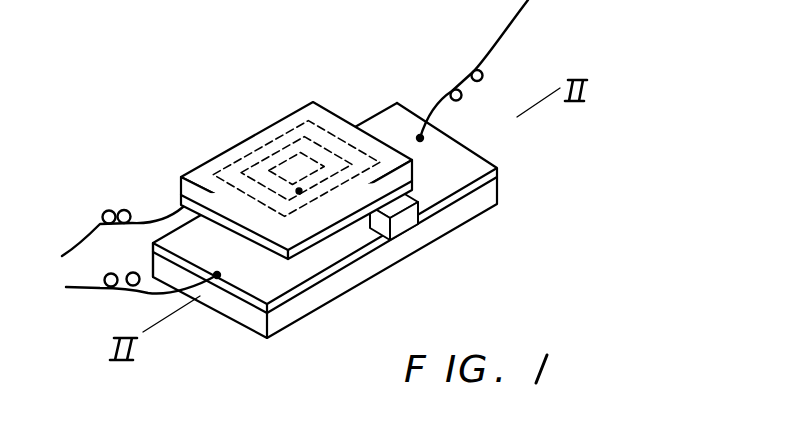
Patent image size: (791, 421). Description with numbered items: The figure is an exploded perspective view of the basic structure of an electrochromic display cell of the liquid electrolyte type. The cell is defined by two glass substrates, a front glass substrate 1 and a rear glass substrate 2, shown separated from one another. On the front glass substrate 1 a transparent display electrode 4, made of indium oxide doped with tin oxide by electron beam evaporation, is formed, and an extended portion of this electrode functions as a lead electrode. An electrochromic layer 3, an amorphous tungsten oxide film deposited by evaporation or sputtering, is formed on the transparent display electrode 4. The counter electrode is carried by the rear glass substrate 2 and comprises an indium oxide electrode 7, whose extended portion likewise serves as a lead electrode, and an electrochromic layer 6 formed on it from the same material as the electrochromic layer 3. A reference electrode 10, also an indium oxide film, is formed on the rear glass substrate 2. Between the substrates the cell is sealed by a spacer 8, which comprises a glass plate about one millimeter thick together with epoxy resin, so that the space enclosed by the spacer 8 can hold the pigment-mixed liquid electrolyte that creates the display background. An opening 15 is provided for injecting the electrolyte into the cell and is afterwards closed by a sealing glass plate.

The front glass substrate 1 is at (181, 177).
The rear glass substrate 2 is at (477, 207).
The electrochromic layer 3 is at (300, 175).
The transparent display electrode 4 is at (180, 205).
The electrochromic layer 6 is at (396, 208).
The electrode 7 is at (467, 143).
The spacer 8 is at (278, 147).
The reference electrode 10 is at (253, 271).
The opening 15 is at (299, 191).